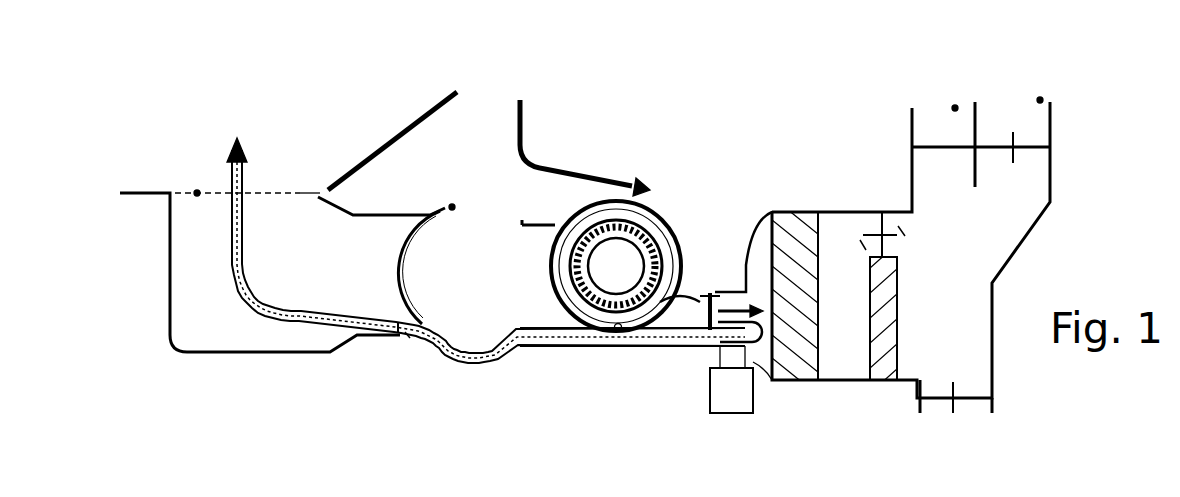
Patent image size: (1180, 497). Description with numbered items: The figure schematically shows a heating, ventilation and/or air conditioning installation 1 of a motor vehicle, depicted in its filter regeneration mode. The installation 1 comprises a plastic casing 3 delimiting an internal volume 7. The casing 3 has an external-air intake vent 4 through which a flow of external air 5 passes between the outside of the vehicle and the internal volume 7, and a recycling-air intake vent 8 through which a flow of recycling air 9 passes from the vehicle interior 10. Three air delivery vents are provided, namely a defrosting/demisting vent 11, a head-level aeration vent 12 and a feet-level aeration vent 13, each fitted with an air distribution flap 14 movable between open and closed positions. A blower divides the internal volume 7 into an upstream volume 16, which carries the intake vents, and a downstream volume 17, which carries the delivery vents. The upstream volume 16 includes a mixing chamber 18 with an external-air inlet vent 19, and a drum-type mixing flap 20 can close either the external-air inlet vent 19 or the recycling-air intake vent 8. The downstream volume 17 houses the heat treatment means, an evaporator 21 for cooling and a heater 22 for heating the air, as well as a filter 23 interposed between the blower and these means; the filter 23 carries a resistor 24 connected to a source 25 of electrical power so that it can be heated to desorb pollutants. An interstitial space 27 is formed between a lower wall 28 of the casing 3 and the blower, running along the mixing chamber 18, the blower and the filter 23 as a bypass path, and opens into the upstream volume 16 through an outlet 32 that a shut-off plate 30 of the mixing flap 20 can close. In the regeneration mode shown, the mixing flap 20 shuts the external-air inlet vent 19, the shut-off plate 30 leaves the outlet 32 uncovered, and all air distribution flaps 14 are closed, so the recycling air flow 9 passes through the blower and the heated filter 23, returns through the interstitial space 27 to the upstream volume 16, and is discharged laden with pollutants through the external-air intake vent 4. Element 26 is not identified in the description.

The heating, ventilation and/or air conditioning installation 1 is at (772, 160).
The casing 3 is at (170, 250).
The external-air intake vent 4 is at (197, 190).
The flow of external air 5 is at (477, 250).
The internal volume 7 is at (578, 267).
The recycling-air intake vent 8 is at (452, 207).
The flow of recycling air 9 is at (497, 190).
The vehicle interior 10 is at (497, 162).
The defrosting/demisting vent 11 is at (932, 373).
The head-level aeration vent 12 is at (955, 106).
The feet-level aeration vent 13 is at (1040, 98).
The air distribution flap 14 is at (923, 157).
The upstream volume 16 is at (415, 259).
The downstream volume 17 is at (911, 250).
The mixing chamber 18 is at (442, 267).
The external-air inlet vent 19 is at (419, 267).
The mixing flap 20 is at (420, 230).
The evaporator 21 is at (795, 211).
The heater 22 is at (907, 290).
The filter 23 is at (745, 290).
The resistor 24 is at (708, 293).
The source of electrical power 25 is at (741, 379).
The cover flap 26 is at (300, 182).
The interstitial space 27 is at (593, 347).
The wall 28 is at (663, 347).
The shut-off plate 30 is at (403, 322).
The outlet 32 is at (410, 338).